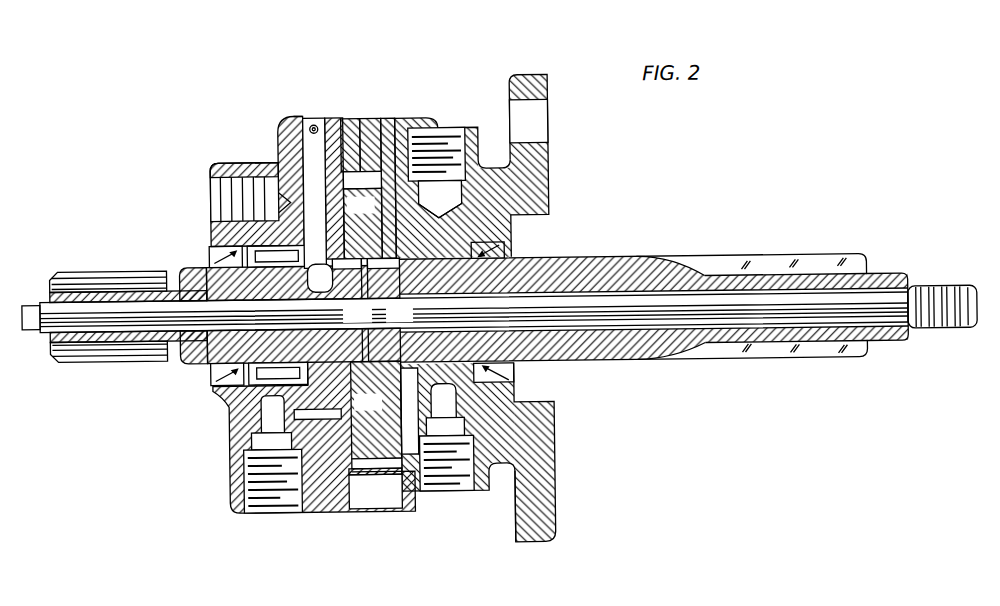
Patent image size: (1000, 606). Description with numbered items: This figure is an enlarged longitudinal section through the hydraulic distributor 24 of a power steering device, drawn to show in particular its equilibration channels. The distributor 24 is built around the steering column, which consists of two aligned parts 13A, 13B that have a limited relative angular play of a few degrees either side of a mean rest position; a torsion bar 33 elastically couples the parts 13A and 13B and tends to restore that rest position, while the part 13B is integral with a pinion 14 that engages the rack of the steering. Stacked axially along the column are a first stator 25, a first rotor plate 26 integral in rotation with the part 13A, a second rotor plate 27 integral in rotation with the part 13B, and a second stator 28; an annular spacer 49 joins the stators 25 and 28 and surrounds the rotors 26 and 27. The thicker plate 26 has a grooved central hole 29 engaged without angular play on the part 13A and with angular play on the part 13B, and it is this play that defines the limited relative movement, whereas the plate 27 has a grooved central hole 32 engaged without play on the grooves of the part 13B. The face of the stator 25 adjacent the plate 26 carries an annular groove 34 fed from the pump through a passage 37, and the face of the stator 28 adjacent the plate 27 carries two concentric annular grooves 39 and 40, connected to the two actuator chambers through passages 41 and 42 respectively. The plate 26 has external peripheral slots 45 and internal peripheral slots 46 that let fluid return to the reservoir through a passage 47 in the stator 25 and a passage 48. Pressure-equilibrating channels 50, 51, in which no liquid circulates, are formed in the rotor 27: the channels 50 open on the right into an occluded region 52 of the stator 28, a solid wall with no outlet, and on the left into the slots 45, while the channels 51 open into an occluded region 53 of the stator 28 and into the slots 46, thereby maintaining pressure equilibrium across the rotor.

The part of the steering column 13A is at (192, 260).
The part of the steering column 13B is at (608, 254).
The pinion 14 is at (707, 262).
The distributor 24 is at (496, 70).
The first stator 25 is at (300, 110).
The first rotor plate 26 is at (364, 168).
The second rotor plate 27 is at (388, 168).
The second stator 28 is at (411, 125).
The grooved central hole 29 is at (358, 269).
The grooved central hole 32 is at (396, 302).
The torsion bar 33 is at (767, 300).
The annular groove 34 is at (346, 418).
The passage 37 is at (270, 504).
The annular groove 39 is at (408, 207).
The annular groove 40 is at (403, 384).
The passage 41 is at (458, 128).
The passage 42 is at (466, 491).
The external peripheral slots 45 is at (346, 170).
The internal peripheral slots 46 is at (343, 369).
The passage 47 is at (310, 170).
The passage 48 is at (212, 194).
The annular spacer 49 is at (376, 110).
The pressure-equilibrating channels 50 is at (362, 214).
The pressure-equilibrating channels 51 is at (375, 418).
The occluded region 52 is at (416, 184).
The occluded region 53 is at (414, 411).